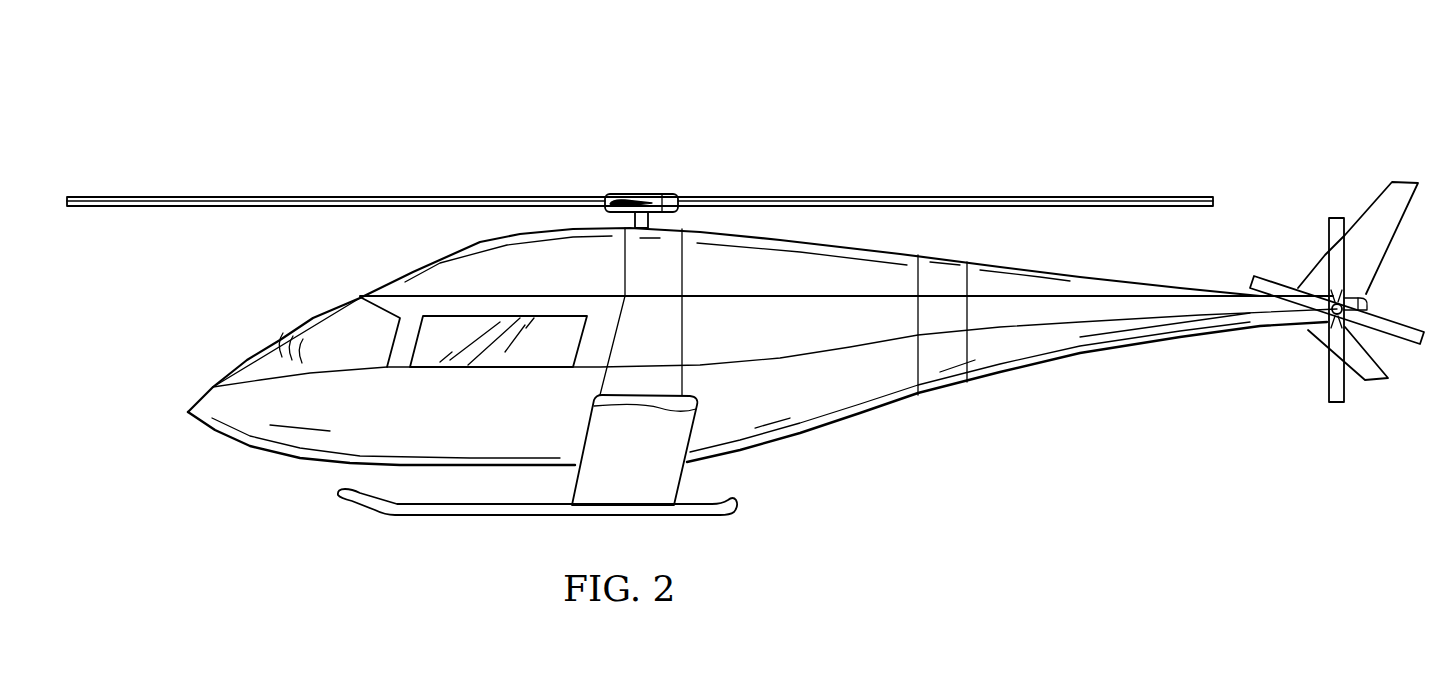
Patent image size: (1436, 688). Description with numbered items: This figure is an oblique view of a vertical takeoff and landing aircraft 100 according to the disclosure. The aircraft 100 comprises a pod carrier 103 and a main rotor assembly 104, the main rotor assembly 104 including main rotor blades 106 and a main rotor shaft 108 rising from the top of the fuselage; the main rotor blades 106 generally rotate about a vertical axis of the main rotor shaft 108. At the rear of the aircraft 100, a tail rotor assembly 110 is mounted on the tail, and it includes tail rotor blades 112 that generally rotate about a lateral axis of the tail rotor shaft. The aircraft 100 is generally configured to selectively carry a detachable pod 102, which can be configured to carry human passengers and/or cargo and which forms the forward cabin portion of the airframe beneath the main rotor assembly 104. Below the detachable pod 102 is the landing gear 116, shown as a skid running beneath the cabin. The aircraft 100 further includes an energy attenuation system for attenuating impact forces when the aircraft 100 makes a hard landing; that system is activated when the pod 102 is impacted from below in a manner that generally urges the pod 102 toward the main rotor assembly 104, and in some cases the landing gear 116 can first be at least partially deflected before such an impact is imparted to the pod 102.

The vertical takeoff and landing (VTOL) aircraft 100 is at (452, 106).
The detachable pod 102 is at (325, 423).
The pod carrier 103 is at (822, 392).
The main rotor assembly 104 is at (626, 188).
The main rotor blades 106 is at (883, 197).
The main rotor shaft 108 is at (652, 222).
The tail rotor assembly 110 is at (1313, 345).
The tail rotor blades 112 is at (1398, 322).
The landing gear 116 is at (470, 517).